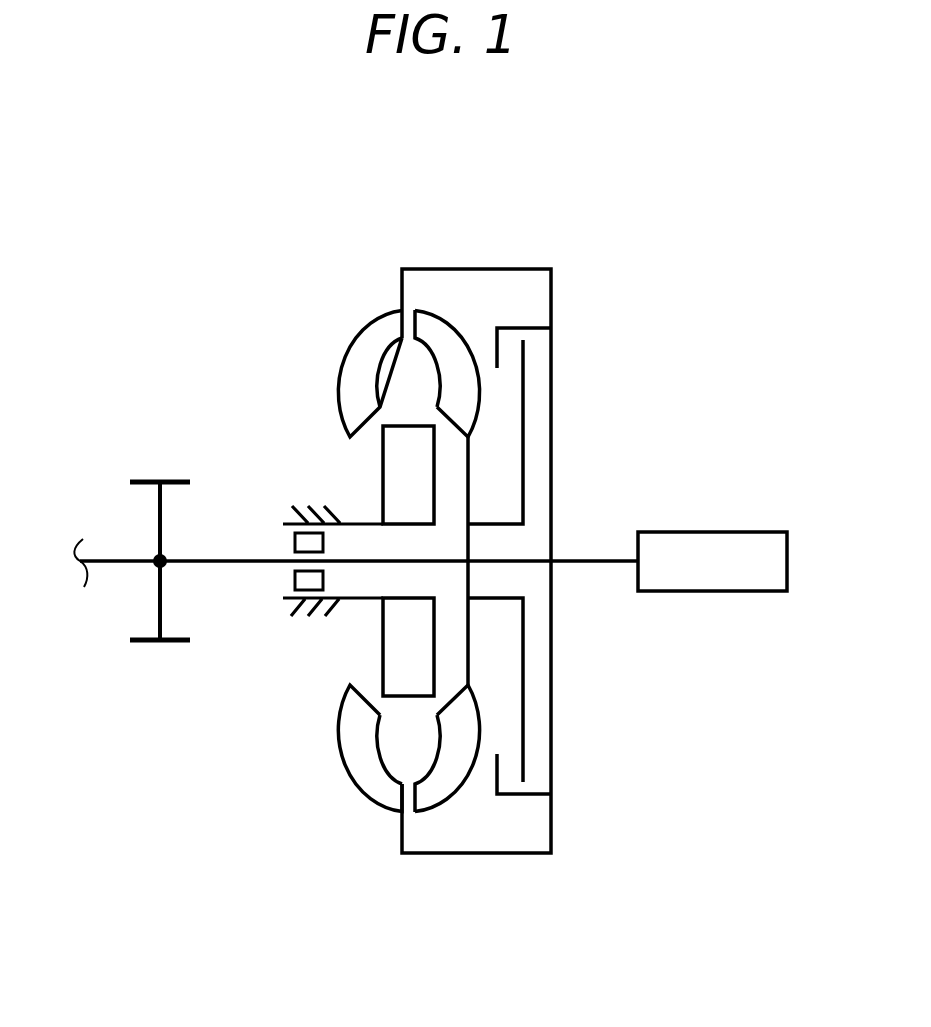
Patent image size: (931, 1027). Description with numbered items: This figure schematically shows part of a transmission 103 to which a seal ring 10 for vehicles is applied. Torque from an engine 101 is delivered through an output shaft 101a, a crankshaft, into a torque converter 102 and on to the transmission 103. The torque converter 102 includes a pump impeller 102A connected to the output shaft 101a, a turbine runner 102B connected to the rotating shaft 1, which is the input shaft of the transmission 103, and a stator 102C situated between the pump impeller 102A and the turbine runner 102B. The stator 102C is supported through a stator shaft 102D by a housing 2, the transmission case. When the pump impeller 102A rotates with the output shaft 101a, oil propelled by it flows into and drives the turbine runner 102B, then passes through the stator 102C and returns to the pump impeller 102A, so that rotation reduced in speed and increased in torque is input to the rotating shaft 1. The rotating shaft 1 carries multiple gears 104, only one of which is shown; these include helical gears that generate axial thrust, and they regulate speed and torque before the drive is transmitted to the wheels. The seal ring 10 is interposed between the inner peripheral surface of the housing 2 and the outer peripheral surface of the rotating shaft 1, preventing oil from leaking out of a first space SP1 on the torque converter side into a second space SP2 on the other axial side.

The rotating shaft 1 is at (233, 560).
The housing 2 is at (318, 616).
The seal ring 10 is at (293, 580).
The engine 101 is at (747, 592).
The output shaft 101a is at (593, 563).
The torque converter 102 is at (541, 206).
The pump impeller 102A is at (368, 327).
The turbine runner 102B is at (443, 322).
The stator 102C is at (381, 475).
The stator shaft 102D is at (363, 520).
The transmission 103 is at (156, 483).
The gears 104 is at (138, 482).
The first space SP1 is at (415, 546).
The second space SP2 is at (263, 580).